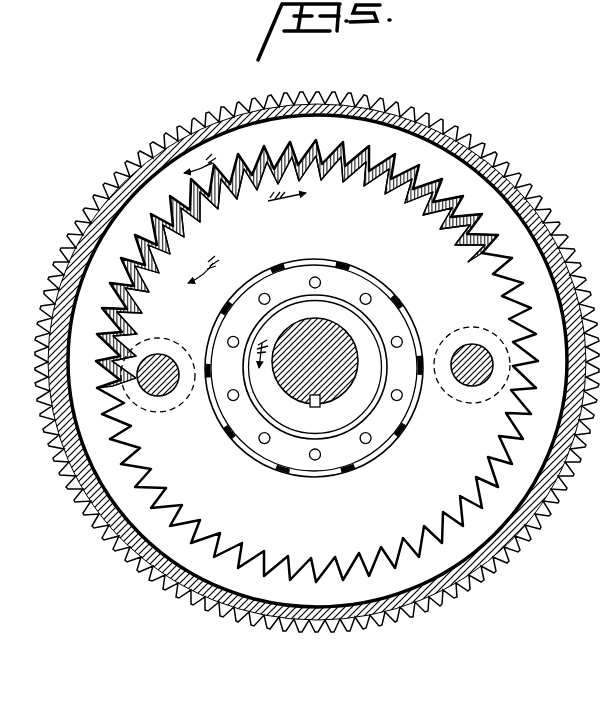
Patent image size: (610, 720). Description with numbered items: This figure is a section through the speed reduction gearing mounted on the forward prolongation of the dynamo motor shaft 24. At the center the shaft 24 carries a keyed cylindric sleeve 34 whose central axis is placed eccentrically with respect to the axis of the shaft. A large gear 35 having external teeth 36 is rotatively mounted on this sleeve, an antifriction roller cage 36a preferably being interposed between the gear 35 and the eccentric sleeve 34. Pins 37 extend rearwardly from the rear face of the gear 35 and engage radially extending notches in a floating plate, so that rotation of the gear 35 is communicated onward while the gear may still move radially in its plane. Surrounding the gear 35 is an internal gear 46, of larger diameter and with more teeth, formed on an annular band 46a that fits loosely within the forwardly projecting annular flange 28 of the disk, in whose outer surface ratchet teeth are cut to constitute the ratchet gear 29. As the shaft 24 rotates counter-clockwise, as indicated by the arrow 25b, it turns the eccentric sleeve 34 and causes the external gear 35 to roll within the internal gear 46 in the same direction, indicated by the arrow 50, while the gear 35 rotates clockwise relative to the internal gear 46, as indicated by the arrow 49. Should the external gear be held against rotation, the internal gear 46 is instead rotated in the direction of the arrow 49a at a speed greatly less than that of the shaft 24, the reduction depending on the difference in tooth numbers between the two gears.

The shaft of the dynamo motor 24 is at (347, 375).
The arrow 25b is at (253, 340).
The annular flange 28 is at (120, 182).
The ratchet gear 29 is at (289, 96).
The cylindric sleeve 34 is at (302, 422).
The large gear 35 is at (370, 238).
The external teeth 36 is at (183, 213).
The antifriction roller cage 36a is at (383, 313).
The pins 37 is at (158, 355).
The internal gear 46 is at (470, 205).
The annular band 46a is at (425, 157).
The arrow 49 is at (287, 209).
The arrow 49a is at (219, 152).
The arrow 50 is at (216, 258).